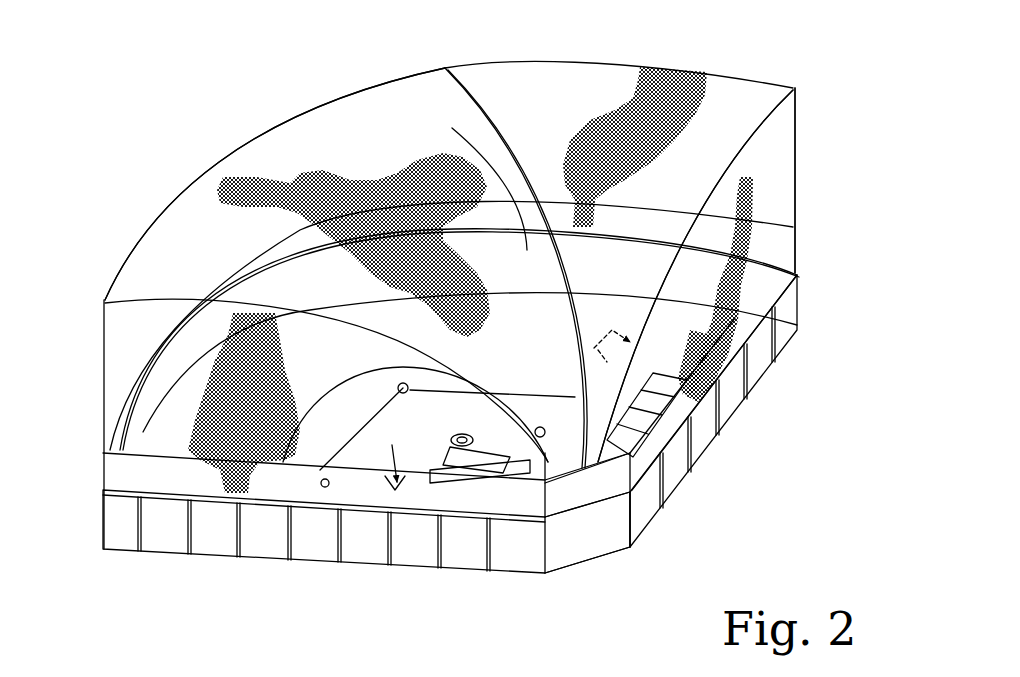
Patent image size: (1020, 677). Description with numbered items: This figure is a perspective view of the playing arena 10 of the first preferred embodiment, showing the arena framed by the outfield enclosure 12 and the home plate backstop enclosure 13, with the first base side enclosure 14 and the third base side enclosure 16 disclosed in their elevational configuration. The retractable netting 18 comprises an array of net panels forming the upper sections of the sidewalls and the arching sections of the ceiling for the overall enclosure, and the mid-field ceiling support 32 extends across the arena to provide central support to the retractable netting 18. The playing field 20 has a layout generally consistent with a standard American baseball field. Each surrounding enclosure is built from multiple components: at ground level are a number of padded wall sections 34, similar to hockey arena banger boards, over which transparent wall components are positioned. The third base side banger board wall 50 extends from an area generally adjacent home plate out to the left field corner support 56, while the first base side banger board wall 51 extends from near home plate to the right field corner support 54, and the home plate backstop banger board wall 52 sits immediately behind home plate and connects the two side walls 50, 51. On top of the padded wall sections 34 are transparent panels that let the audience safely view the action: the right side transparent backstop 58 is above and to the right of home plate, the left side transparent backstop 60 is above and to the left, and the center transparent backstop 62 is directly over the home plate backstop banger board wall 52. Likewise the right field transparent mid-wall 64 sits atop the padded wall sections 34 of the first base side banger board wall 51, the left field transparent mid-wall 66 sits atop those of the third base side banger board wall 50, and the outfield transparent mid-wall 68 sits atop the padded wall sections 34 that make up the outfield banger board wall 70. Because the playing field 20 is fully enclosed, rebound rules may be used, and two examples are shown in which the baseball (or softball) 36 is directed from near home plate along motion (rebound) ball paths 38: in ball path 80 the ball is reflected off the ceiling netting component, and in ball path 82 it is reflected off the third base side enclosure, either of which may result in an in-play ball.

The playing arena 10 is at (254, 76).
The outfield enclosure 12 is at (800, 228).
The home plate backstop enclosure 13 is at (634, 503).
The first base side enclosure 14 is at (781, 285).
The third base side enclosure 16 is at (180, 480).
The retractable netting 18 is at (668, 62).
The playing field 20 is at (219, 378).
The mid-field ceiling support 32 is at (445, 66).
The padded wall sections 34 is at (417, 550).
The baseball (or softball) 36 is at (536, 424).
The motion (rebound) ball paths 38 is at (562, 344).
The third base side banger board wall 50 is at (273, 543).
The first base side banger board wall 51 is at (790, 327).
The home plate backstop banger board wall 52 is at (560, 553).
The right field corner support 54 is at (797, 160).
The left field corner support 56 is at (104, 405).
The right side transparent backstop 58 is at (700, 460).
The left side transparent backstop 60 is at (470, 480).
The center transparent backstop 62 is at (577, 483).
The right field transparent mid-wall 64 is at (760, 302).
The left field transparent mid-wall 66 is at (150, 443).
The outfield transparent mid-wall 68 is at (227, 270).
The outfield banger board wall 70 is at (473, 181).
The ball path 80 is at (613, 352).
The ball path 82 is at (377, 455).